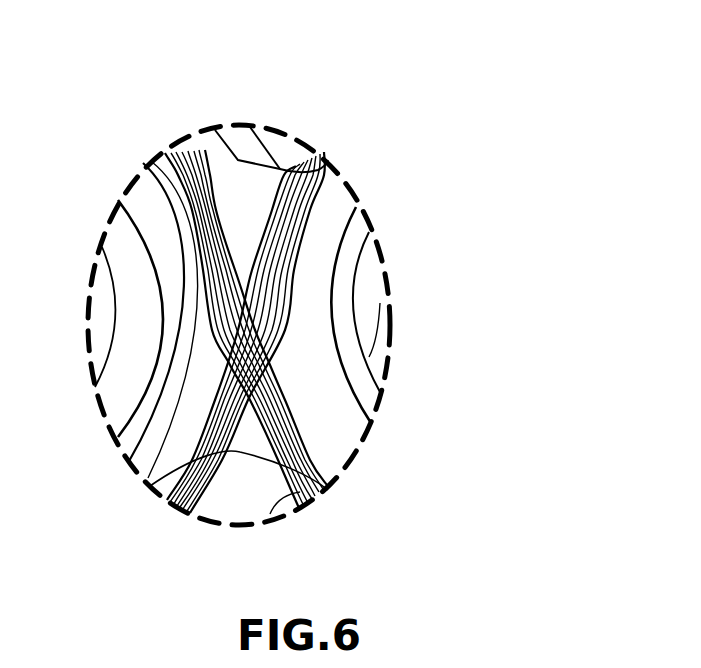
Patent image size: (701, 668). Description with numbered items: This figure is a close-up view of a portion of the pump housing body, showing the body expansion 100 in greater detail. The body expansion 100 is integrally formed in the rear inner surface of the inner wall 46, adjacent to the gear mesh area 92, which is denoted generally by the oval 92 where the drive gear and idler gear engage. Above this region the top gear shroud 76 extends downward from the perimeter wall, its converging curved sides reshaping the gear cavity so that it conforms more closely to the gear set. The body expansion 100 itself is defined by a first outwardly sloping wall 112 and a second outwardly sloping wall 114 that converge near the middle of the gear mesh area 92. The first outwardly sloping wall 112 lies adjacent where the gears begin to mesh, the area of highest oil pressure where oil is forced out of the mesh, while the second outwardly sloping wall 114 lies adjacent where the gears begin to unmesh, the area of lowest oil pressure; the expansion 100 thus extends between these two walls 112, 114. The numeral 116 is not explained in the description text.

The inner wall 46 is at (322, 445).
The top gear shroud 76 is at (279, 151).
The gear mesh area 92 is at (326, 160).
The body expansion 100 is at (158, 163).
The first outwardly sloping wall 112 is at (340, 478).
The second outwardly sloping wall 114 is at (257, 226).
The second surface 116 is at (237, 347).